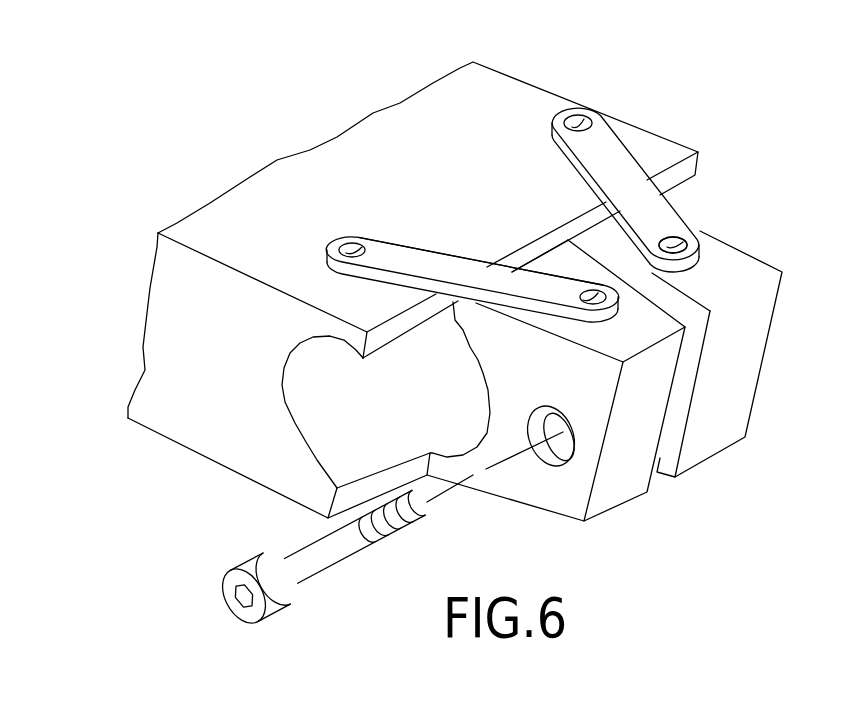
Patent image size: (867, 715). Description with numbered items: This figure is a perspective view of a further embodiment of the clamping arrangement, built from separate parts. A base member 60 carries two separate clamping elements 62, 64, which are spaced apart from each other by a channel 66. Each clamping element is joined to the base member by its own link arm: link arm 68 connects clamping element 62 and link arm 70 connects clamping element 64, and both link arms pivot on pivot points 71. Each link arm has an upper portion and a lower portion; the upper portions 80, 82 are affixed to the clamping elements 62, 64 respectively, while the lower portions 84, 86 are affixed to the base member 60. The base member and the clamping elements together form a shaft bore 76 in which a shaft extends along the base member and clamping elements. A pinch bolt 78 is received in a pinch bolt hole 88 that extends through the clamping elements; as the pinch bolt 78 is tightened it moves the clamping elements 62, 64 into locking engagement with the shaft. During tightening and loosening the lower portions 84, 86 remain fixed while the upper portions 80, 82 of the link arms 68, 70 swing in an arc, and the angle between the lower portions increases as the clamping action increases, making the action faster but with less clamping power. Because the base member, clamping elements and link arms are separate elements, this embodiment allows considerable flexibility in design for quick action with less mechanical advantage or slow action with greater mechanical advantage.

The base member 60 is at (482, 156).
The clamping element 62 is at (733, 287).
The clamping element 64 is at (556, 370).
The channel 66 is at (682, 397).
The link arm 68 is at (662, 210).
The link arm 70 is at (440, 265).
The pivot points 71 is at (580, 117).
The shaft bore 76 is at (312, 423).
The pinch bolt 78 is at (317, 565).
The upper portion of link arm 80 is at (668, 227).
The upper portion of link arm 82 is at (547, 288).
The lower portion of link arm 84 is at (607, 143).
The lower portion of link arm 86 is at (382, 249).
The pinch bolt hole 88 is at (552, 448).